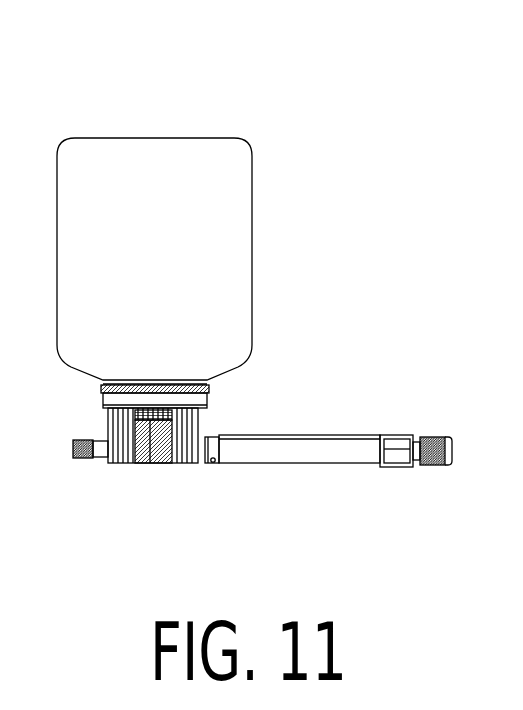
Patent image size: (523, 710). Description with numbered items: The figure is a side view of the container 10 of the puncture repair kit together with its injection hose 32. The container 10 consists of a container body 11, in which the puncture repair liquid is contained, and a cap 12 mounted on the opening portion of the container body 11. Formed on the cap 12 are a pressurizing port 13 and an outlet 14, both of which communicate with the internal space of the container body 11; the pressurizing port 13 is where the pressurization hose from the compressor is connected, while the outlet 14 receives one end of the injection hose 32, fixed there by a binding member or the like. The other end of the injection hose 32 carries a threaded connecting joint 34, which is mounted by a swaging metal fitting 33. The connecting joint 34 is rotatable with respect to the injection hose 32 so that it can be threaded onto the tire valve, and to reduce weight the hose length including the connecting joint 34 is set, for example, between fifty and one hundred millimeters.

The container 10 is at (225, 135).
The container body 11 is at (115, 158).
The cap 12 is at (148, 453).
The pressurizing port 13 is at (77, 460).
The outlet 14 is at (227, 466).
The injection hose 32 is at (297, 455).
The swaging metal fitting 33 is at (396, 458).
The connecting joint 34 is at (433, 464).